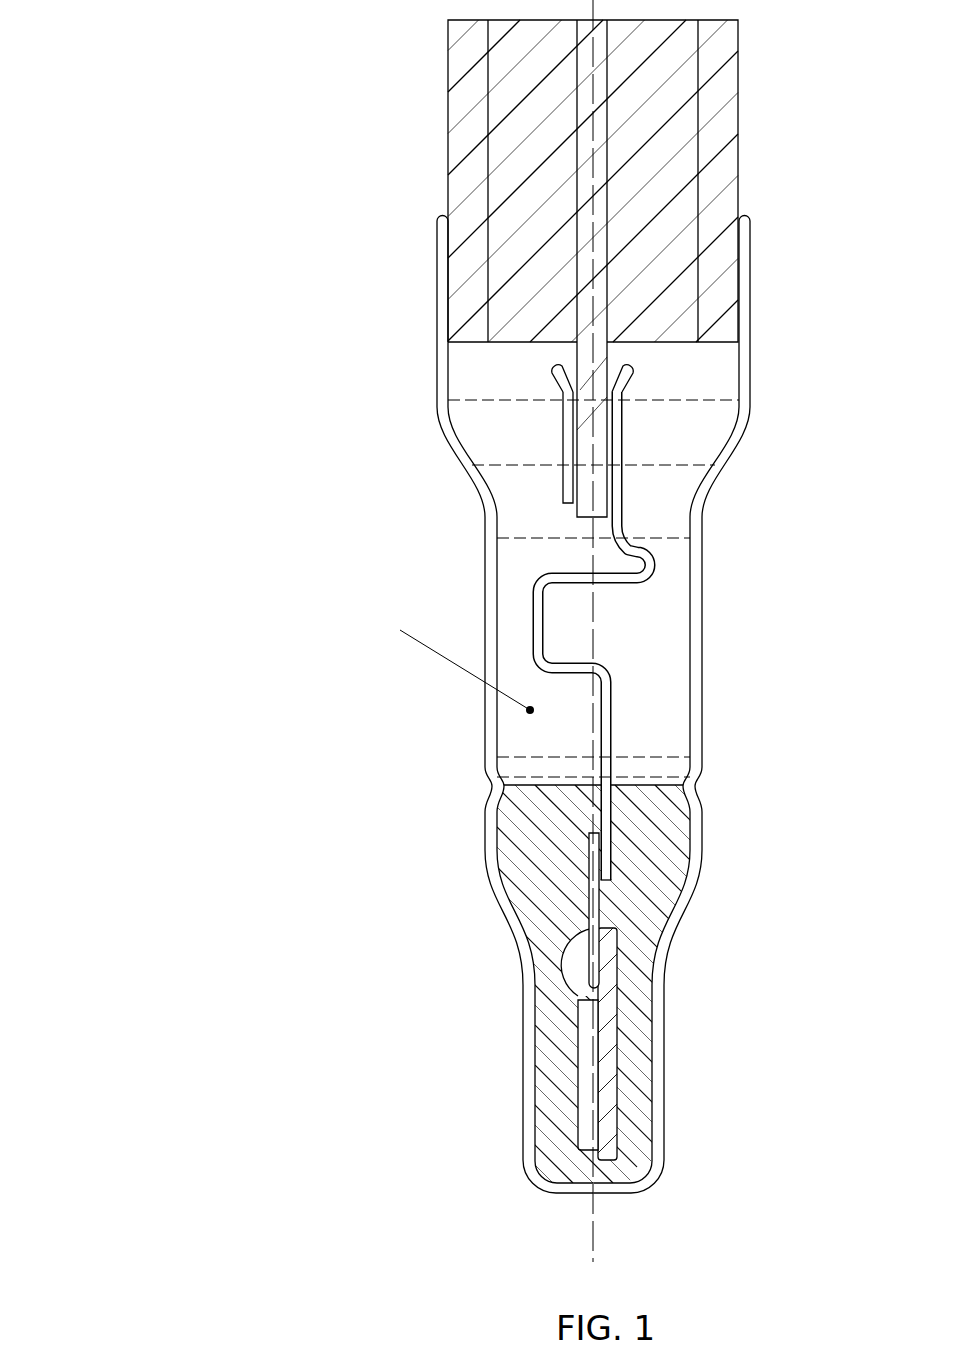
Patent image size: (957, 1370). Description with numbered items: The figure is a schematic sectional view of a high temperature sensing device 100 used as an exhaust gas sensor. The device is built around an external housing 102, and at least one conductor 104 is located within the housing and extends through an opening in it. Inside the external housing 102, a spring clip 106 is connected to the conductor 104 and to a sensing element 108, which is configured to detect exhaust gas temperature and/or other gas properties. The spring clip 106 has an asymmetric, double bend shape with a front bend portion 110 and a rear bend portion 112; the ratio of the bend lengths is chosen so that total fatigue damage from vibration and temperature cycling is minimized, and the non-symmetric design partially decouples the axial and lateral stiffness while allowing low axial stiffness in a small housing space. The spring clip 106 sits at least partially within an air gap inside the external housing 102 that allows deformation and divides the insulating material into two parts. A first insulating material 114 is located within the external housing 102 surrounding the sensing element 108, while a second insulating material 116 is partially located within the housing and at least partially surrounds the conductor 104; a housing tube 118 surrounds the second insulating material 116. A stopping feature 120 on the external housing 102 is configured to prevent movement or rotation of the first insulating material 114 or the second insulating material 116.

The sensing device 100 is at (466, 631).
The external housing 102 is at (523, 1073).
The conductor 104 is at (583, 258).
The spring clip 106 is at (613, 720).
The sensing element 108 is at (620, 1100).
The front bend portion 110 is at (503, 607).
The rear bend portion 112 is at (656, 560).
The first insulating material 114 is at (543, 865).
The second insulating material 116 is at (516, 80).
The housing tube 118 is at (739, 188).
The stopping feature 120 is at (693, 792).